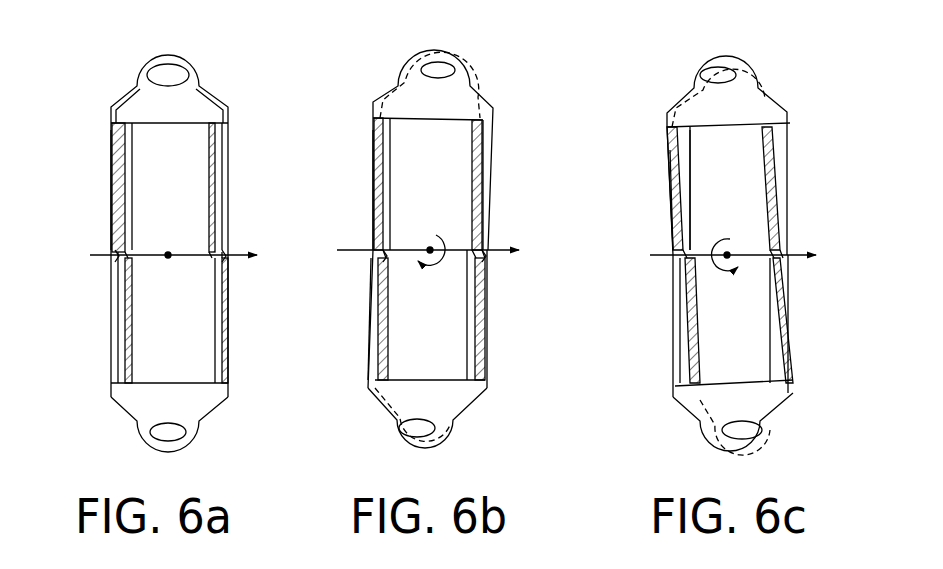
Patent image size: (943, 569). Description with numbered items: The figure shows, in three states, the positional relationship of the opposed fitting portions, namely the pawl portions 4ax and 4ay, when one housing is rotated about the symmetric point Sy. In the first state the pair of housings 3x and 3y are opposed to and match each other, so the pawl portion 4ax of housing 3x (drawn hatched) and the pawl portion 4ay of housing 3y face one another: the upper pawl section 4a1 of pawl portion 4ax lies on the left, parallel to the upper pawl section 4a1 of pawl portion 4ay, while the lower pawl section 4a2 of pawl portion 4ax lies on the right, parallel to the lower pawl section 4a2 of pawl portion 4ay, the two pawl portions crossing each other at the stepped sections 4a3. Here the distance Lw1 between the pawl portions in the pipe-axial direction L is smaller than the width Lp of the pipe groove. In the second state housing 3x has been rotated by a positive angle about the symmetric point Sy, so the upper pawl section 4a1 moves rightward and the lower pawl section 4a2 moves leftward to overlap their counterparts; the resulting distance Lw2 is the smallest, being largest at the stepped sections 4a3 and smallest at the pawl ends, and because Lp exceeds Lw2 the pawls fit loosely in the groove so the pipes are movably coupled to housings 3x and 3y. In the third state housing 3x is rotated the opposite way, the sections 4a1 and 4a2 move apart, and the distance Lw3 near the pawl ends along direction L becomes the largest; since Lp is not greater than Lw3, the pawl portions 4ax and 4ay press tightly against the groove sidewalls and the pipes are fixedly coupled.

In FIG. 6a, the upper pawl section 4a1 is at (113, 130).
In FIG. 6b, the upper pawl section 4a1 is at (375, 128).
In FIG. 6c, the upper pawl section 4a1 is at (686, 143).
In FIG. 6a, the lower pawl section 4a2 is at (119, 396).
In FIG. 6b, the lower pawl section 4a2 is at (372, 362).
In FIG. 6c, the lower pawl section 4a2 is at (684, 390).
In FIG. 6a, the stepped section 4a3 is at (228, 243).
In FIG. 6b, the stepped section 4a3 is at (372, 258).
In FIG. 6a, the pawl portion 4ax is at (110, 228).
In FIG. 6b, the pawl portion 4ax is at (372, 177).
In FIG. 6c, the pawl portion 4ax is at (669, 222).
In FIG. 6a, the pawl portion 4ay is at (139, 207).
In FIG. 6b, the pawl portion 4ay is at (398, 196).
In FIG. 6c, the pawl portion 4ay is at (696, 217).
In FIG. 6a, the housing 3x is at (142, 410).
In FIG. 6b, the housing 3x is at (496, 81).
In FIG. 6c, the housing 3x is at (657, 81).
In FIG. 6a, the housing 3y is at (168, 252).
In FIG. 6b, the housing 3y is at (397, 66).
In FIG. 6c, the housing 3y is at (753, 63).
In FIG. 6a, the symmetric point Sy is at (167, 238).
In FIG. 6b, the symmetric point Sy is at (420, 234).
In FIG. 6c, the symmetric point Sy is at (743, 238).
In FIG. 6a, the pipe-axial direction L is at (181, 260).
In FIG. 6b, the pipe-axial direction L is at (439, 253).
In FIG. 6c, the pipe-axial direction L is at (743, 257).
In FIG. 6a, the distance between pawl portions at initial position Lw1 is at (93, 138).
In FIG. 6b, the distance between pawl portions at first position Lw2 is at (420, 243).
In FIG. 6c, the distance between pawl portions at second position Lw3 is at (717, 135).
In FIG. 6a, the width of the groove Lp is at (98, 330).